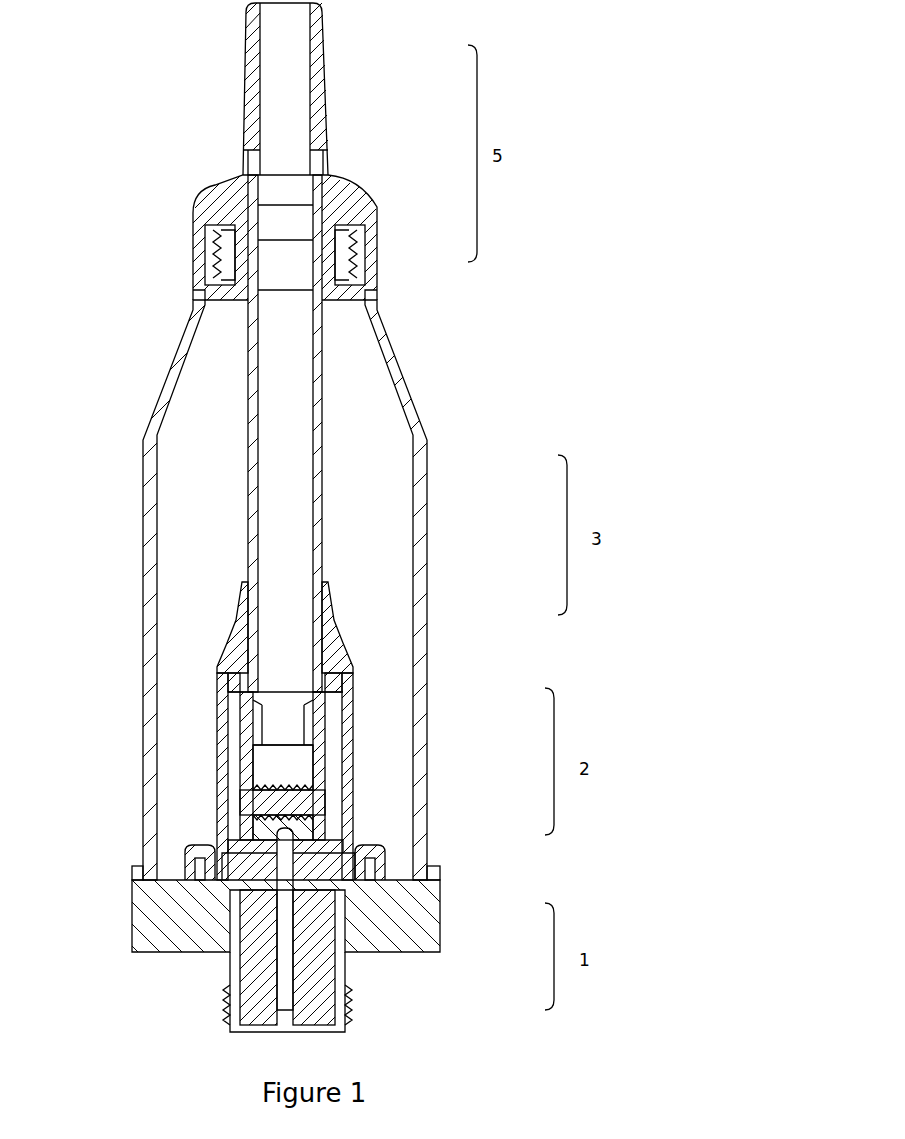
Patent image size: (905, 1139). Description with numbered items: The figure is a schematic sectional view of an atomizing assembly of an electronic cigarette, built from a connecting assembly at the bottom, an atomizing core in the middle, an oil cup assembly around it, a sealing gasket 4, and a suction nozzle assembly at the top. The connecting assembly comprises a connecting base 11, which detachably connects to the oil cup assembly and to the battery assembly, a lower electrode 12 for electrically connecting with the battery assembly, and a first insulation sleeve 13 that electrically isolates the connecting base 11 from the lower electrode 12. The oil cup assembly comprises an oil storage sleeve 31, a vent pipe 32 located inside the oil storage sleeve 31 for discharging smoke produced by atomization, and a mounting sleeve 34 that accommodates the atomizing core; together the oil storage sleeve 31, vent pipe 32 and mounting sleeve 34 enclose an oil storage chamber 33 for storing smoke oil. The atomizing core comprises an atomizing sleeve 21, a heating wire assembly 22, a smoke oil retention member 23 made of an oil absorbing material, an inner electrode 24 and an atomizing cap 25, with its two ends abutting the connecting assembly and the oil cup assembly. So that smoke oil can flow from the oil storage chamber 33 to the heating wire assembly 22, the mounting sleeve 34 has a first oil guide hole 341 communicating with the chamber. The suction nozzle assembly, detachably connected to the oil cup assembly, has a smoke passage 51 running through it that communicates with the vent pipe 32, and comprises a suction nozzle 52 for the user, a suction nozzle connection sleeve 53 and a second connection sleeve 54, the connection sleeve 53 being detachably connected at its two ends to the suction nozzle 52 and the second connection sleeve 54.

The connecting base 11 is at (405, 920).
The lower electrode 12 is at (340, 1003).
The first insulation sleeve 13 is at (340, 967).
The atomizing sleeve 21 is at (337, 713).
The heating wire assembly 22 is at (338, 797).
The smoke oil retention member 23 is at (340, 770).
The inner electrode 24 is at (338, 830).
The atomizing cap 25 is at (337, 740).
The oil storage sleeve 31 is at (418, 475).
The vent pipe 32 is at (315, 527).
The oil storage chamber 33 is at (367, 570).
The mounting sleeve 34 is at (322, 615).
The first oil guide hole 341 is at (220, 772).
The sealing gasket 4 is at (180, 852).
The smoke passage 51 is at (300, 63).
The suction nozzle 52 is at (323, 110).
The suction nozzle connection sleeve 53 is at (330, 187).
The second connection sleeve 54 is at (355, 250).